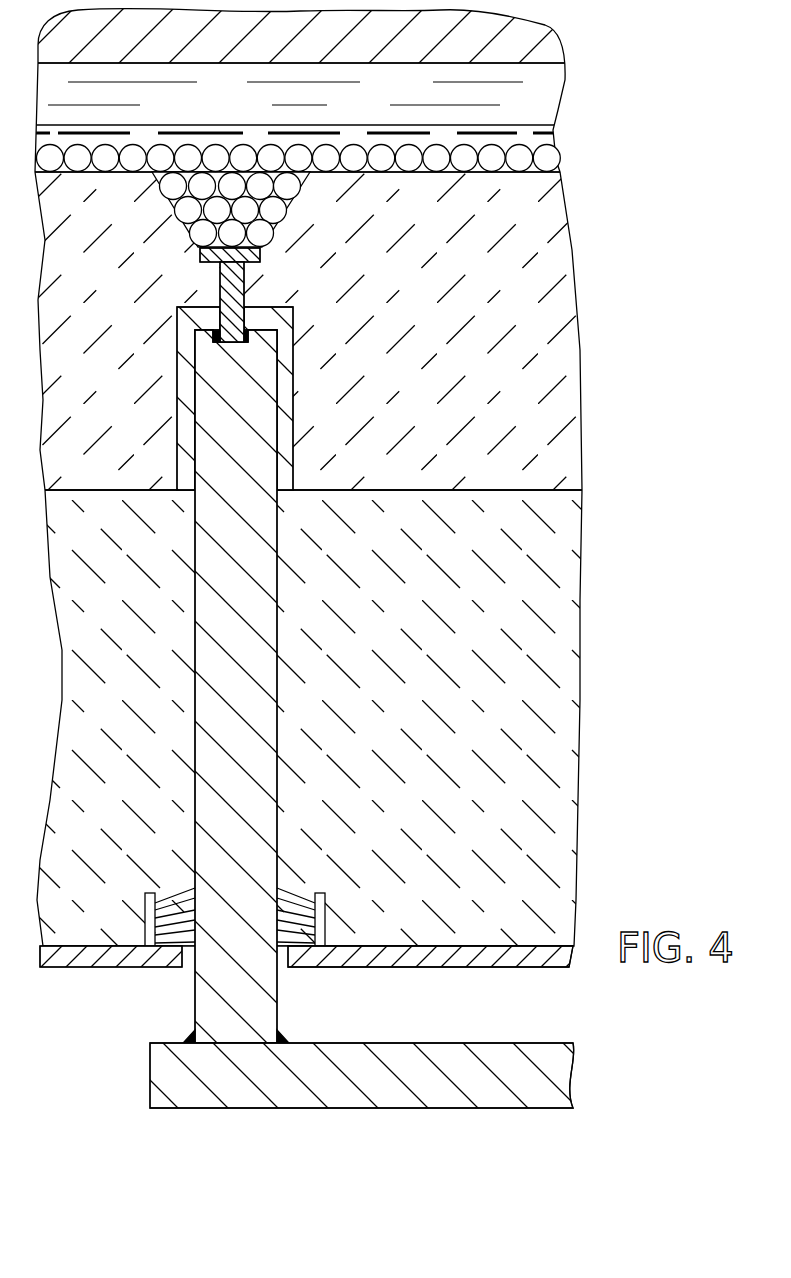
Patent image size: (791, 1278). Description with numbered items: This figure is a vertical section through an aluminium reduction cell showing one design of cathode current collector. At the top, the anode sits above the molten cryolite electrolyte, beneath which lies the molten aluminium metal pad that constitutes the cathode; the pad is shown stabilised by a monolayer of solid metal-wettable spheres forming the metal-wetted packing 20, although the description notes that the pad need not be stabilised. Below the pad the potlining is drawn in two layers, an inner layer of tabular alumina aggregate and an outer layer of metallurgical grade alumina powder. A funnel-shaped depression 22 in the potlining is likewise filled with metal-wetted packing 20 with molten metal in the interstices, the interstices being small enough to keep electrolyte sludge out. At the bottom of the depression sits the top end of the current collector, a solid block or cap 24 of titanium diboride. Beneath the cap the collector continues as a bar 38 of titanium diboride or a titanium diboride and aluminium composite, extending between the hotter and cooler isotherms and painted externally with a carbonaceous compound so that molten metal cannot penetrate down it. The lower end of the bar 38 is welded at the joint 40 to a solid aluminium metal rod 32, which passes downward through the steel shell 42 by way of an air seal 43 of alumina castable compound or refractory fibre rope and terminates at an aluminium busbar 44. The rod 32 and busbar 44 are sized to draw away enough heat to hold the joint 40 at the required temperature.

The metal-wetted packing 20 is at (218, 152).
The depression 22 is at (178, 228).
The solid block or cap 24 is at (253, 262).
The solid aluminium metal rod 32 is at (250, 572).
The bar 38 is at (213, 271).
The weld joint 40 is at (248, 325).
The steel shell 42 is at (43, 968).
The air seal 43 is at (290, 913).
The aluminium busbar 44 is at (338, 1093).